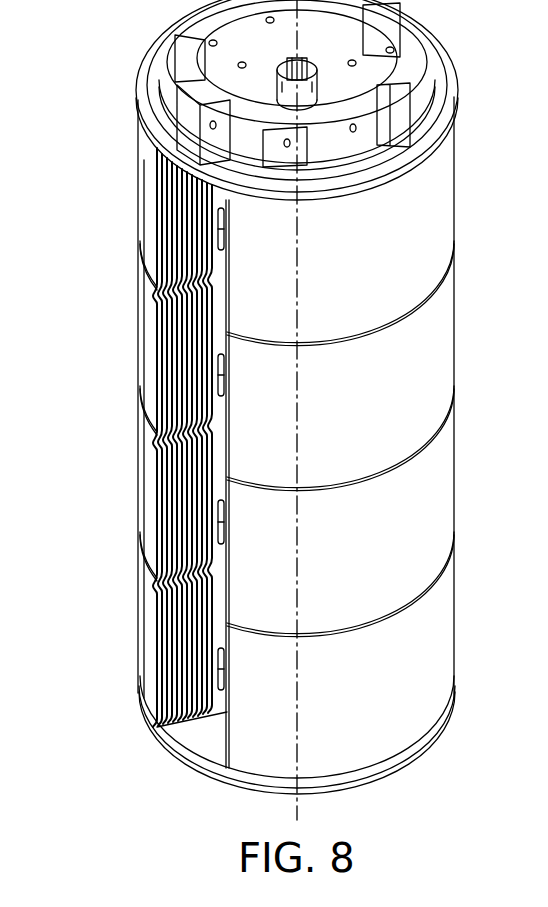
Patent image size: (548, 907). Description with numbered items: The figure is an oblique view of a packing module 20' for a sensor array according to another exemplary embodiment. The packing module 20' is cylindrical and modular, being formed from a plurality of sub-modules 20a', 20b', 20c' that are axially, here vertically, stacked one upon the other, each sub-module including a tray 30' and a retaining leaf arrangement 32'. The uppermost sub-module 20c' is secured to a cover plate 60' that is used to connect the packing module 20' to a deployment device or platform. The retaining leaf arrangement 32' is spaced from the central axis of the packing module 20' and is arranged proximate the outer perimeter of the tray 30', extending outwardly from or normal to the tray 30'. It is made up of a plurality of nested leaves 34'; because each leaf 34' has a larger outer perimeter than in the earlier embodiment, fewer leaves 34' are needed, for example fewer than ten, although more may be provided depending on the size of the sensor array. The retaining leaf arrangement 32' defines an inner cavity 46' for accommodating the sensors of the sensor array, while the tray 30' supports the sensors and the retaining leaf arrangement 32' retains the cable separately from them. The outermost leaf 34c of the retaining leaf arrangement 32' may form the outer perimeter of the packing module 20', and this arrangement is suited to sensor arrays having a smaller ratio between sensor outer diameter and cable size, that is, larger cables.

The packing module 20' is at (251, 384).
The cover plate 60' is at (261, 85).
The retaining leaf arrangement 32' is at (146, 437).
The inner cavity 46' is at (151, 449).
The nested leaves 34' is at (118, 483).
The outermost leaf 34c is at (150, 517).
The tray 30' is at (258, 735).
The uppermost sub-module 20c' is at (378, 279).
The sub-module 20a' is at (379, 424).
The sub-module 20b' is at (380, 570).